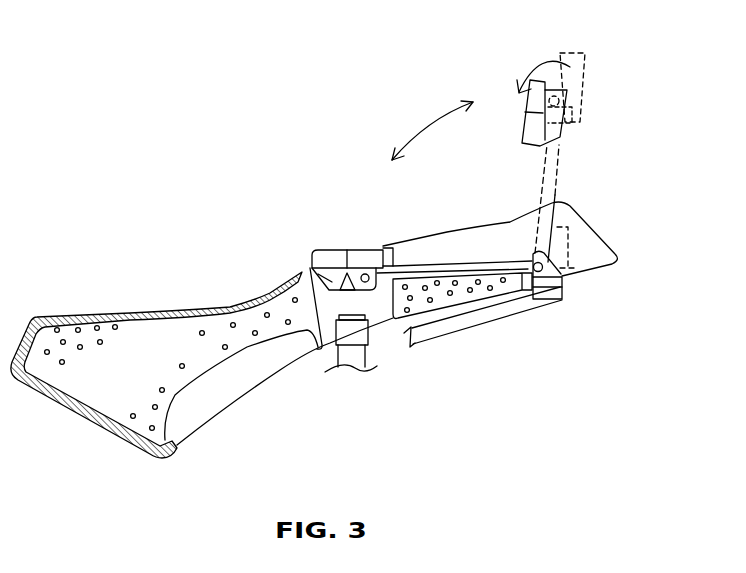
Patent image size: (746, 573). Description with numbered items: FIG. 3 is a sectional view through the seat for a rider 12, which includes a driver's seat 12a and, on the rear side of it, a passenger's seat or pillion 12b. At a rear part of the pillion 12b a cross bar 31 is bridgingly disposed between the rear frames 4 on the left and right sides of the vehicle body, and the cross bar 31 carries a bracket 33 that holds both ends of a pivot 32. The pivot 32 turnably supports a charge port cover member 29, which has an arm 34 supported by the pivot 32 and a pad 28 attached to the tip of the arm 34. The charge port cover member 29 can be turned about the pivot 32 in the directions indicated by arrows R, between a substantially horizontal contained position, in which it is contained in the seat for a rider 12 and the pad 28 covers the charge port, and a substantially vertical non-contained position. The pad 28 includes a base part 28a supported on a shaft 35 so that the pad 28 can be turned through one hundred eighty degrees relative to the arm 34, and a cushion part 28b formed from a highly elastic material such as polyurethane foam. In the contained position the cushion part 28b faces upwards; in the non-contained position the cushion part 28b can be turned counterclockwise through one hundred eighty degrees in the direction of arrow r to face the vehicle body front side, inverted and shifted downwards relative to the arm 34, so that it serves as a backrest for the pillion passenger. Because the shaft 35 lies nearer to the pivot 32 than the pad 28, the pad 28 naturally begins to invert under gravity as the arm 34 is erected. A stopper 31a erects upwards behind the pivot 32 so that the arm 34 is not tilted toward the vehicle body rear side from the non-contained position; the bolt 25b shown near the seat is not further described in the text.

The rear frame 4 is at (462, 322).
The seat for a rider 12 is at (186, 302).
The driver's seat 12a is at (88, 316).
The passenger's seat (pillion) 12b is at (461, 234).
The bolt 25b is at (365, 338).
The pad 28 is at (307, 222).
The base part 28a is at (290, 287).
The cushion part 28b is at (325, 262).
The charge port cover member 29 is at (412, 252).
The cross bar 31 is at (551, 300).
The stopper 31a is at (560, 228).
The pivot 32 is at (548, 262).
The bracket 33 is at (578, 267).
The arm 34 is at (501, 270).
The shaft 35 is at (364, 273).
The arrows R is at (430, 125).
The arrow r is at (535, 72).